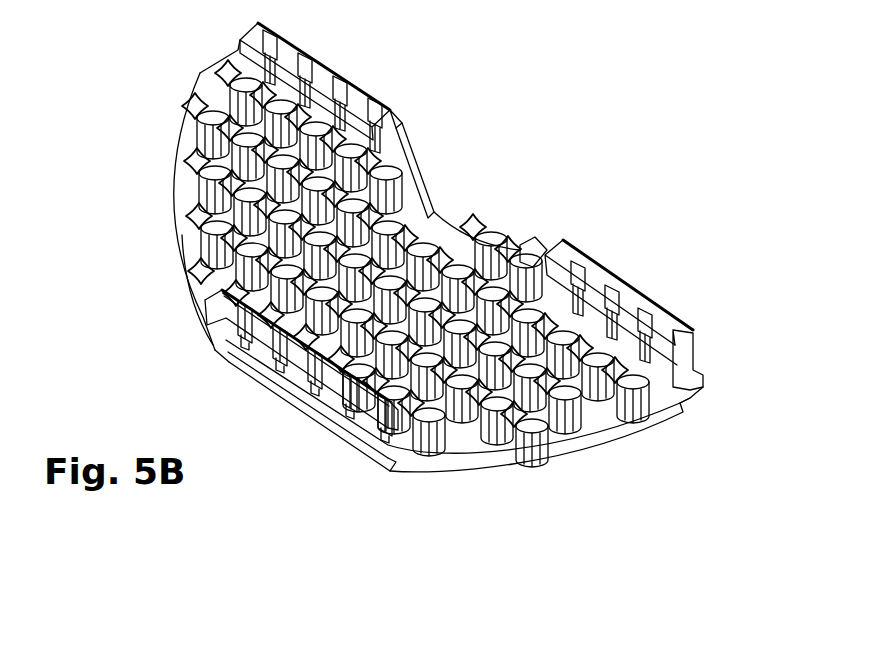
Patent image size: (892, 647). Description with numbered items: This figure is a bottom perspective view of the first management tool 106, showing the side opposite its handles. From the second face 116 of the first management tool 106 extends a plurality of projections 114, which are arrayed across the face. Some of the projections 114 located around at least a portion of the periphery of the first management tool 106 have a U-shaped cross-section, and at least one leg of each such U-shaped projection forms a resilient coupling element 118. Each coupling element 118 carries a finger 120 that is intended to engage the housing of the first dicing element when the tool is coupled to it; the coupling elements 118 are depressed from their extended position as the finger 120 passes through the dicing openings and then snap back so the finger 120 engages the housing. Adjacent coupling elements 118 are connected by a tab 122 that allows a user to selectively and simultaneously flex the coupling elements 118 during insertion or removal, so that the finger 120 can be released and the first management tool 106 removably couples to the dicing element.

The first management tool 106 is at (153, 125).
The projections 114 is at (497, 267).
The second face 116 is at (665, 412).
The resilient coupling element 118 is at (338, 90).
The finger 120 is at (394, 114).
The tab 122 is at (703, 388).